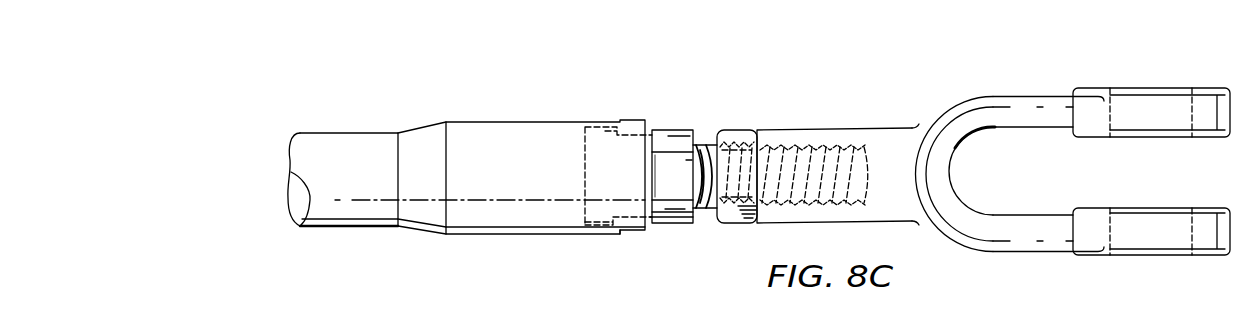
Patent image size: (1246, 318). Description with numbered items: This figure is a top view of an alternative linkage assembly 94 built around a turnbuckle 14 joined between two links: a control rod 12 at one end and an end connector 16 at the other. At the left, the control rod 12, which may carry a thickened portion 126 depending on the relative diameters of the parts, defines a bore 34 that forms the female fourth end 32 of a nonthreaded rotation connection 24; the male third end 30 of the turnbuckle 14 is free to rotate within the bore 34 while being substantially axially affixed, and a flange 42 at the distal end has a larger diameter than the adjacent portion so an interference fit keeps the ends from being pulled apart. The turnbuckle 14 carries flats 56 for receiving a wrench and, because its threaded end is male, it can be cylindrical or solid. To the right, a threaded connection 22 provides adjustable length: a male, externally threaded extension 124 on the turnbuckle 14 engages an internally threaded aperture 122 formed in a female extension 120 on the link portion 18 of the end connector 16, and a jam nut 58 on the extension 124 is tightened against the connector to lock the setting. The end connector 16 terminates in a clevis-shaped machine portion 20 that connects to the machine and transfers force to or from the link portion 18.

The control rod 12 is at (338, 133).
The thickened portion 126 is at (510, 164).
The rotation connection 24 is at (493, 169).
The flange 42 is at (600, 138).
The male third end 30 is at (620, 172).
The female fourth end 32 is at (632, 232).
The turnbuckle 14 is at (669, 182).
The bore 34 is at (662, 130).
The flats 56 is at (671, 176).
The linkage assembly 94 is at (806, 140).
The threaded connection 22 is at (747, 117).
The jam nut 58 is at (732, 128).
The link portion 18 is at (838, 164).
The female extension 120 is at (833, 140).
The internally threaded aperture 122 is at (840, 198).
The externally threaded extension 124 is at (787, 196).
The end connector 16 is at (1073, 152).
The machine portion 20 is at (1035, 112).